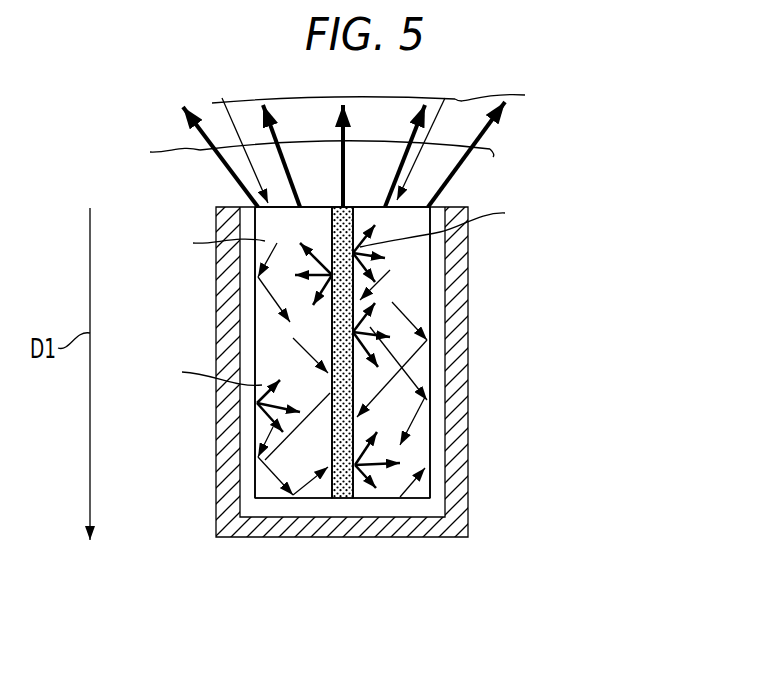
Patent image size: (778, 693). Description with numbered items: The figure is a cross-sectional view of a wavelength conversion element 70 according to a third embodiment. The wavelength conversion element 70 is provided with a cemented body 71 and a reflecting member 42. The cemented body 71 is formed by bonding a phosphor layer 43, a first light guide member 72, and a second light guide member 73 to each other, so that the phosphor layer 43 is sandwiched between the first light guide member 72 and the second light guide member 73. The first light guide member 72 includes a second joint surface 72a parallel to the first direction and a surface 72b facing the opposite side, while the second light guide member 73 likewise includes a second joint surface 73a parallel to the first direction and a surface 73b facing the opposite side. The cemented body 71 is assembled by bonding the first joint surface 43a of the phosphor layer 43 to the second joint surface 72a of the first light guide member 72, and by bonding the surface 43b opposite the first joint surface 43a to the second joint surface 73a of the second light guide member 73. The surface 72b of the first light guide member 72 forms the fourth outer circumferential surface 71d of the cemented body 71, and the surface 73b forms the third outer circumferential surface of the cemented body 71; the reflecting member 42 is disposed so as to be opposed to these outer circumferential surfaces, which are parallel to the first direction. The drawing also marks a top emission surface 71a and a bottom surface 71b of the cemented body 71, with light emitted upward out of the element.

The wavelength conversion element 70 is at (550, 142).
The cemented body 71 is at (380, 404).
The light emission surface of wavelength conversion member 71a is at (270, 205).
The bottom surface of wavelength conversion member 71b is at (432, 499).
The fourth outer circumferential surface 71d is at (197, 352).
The first light guide member 72 is at (336, 401).
The second joint surface 72a is at (332, 398).
The surface 72b is at (255, 395).
The second light guide member 73 is at (381, 401).
The second joint surface 73a is at (353, 320).
The surface 73b is at (430, 272).
The reflecting member 42 is at (453, 240).
The phosphor layer 43 is at (336, 401).
The first joint surface 43a is at (332, 332).
The surface 43b is at (353, 385).